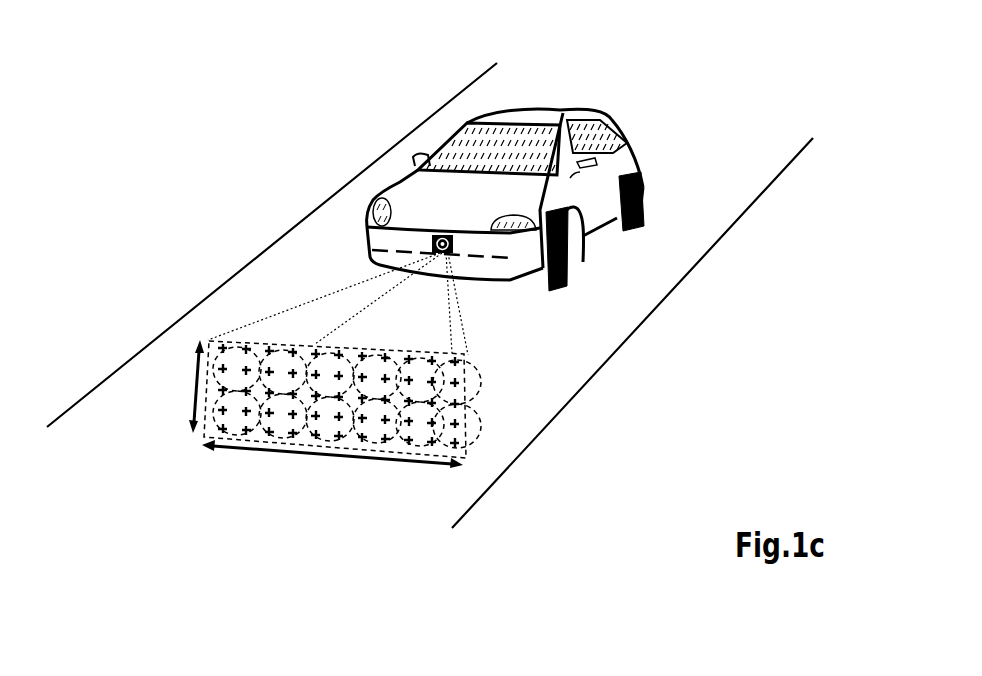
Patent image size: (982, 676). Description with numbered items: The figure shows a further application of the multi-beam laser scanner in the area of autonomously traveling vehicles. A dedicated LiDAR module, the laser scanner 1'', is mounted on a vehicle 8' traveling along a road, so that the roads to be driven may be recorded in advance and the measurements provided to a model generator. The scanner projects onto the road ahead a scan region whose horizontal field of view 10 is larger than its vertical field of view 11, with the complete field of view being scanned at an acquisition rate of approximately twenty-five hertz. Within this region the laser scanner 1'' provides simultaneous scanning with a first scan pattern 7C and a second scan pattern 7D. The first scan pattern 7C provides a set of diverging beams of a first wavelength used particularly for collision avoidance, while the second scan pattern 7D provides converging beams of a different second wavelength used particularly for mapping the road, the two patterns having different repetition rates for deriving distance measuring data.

The vehicle 8' is at (434, 162).
The laser scanner 1'' is at (313, 215).
The first multi-beam scan pattern 7C is at (462, 373).
The second multi-beam scan pattern 7D is at (433, 383).
The horizontal field of view 10 is at (332, 469).
The vertical field of view 11 is at (180, 386).